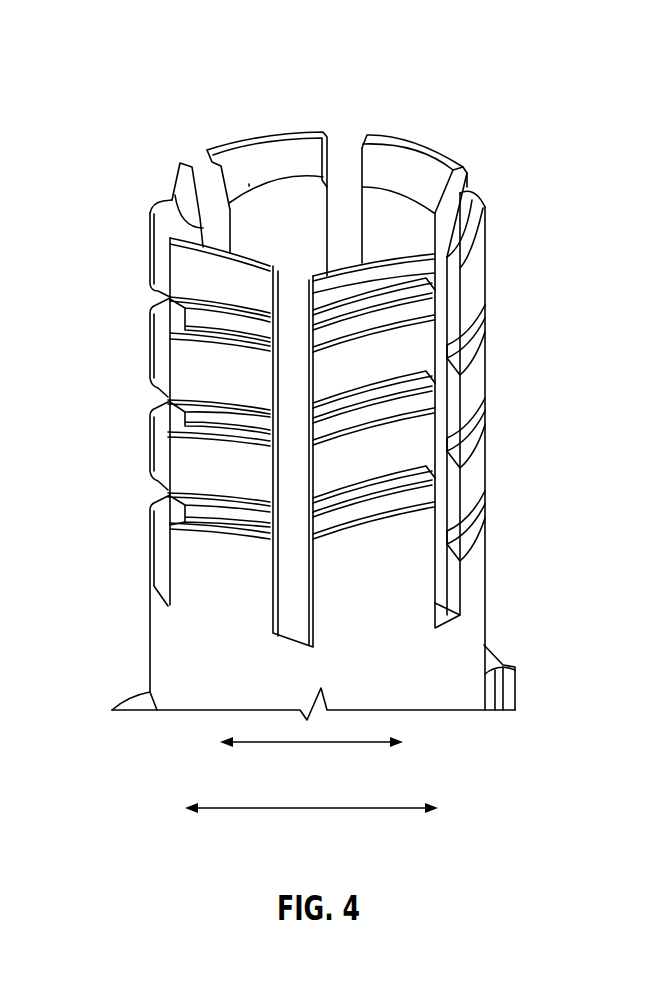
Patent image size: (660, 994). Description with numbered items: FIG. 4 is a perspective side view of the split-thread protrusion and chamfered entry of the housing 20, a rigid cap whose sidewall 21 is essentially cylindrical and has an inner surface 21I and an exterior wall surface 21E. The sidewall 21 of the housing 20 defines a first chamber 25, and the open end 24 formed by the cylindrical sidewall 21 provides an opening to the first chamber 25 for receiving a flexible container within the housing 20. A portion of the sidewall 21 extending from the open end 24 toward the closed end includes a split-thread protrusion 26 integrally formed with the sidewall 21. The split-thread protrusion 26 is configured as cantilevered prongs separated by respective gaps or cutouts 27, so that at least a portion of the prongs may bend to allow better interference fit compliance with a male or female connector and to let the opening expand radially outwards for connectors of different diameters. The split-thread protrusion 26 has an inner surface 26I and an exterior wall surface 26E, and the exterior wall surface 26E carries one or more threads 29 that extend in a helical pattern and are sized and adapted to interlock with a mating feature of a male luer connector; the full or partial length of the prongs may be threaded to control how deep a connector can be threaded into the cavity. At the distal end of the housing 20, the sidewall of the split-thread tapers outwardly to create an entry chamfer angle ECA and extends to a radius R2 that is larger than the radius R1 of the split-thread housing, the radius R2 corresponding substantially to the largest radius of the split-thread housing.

The housing 20 is at (473, 693).
The sidewall 21 is at (162, 658).
The exterior wall surface 21E is at (485, 590).
The inner surface 21I is at (275, 197).
The open end 24 is at (220, 152).
The first chamber 25 is at (256, 155).
The split-thread protrusion 26 is at (479, 155).
The inner surface 26I is at (392, 217).
The exterior wall surface 26E is at (468, 182).
The cutouts 27 is at (349, 130).
The threads 29 is at (488, 267).
The entry chamfer angle ECA is at (249, 185).
The radius of the split-thread housing R1 is at (311, 760).
The radius R2 is at (311, 828).